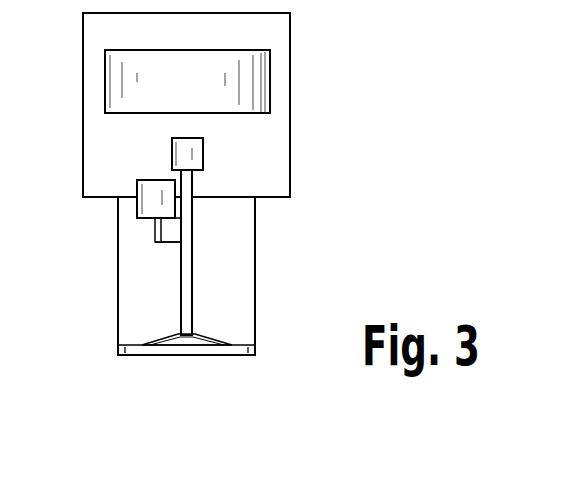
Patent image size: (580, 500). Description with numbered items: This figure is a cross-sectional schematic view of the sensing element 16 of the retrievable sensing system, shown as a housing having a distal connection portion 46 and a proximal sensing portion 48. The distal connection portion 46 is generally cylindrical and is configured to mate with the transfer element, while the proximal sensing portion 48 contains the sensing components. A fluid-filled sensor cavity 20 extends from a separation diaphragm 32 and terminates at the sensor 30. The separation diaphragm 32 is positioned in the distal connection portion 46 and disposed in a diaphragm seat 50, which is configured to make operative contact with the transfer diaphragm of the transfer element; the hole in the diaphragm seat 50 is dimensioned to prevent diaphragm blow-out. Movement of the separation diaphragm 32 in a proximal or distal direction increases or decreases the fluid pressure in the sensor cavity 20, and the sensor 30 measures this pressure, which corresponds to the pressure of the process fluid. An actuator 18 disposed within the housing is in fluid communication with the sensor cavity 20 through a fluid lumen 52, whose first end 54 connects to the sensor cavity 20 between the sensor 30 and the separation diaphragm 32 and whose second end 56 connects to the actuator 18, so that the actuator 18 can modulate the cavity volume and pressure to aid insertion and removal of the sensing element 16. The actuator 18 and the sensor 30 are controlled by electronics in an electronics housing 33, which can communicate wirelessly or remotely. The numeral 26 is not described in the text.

The sensing element 16 is at (363, 67).
The actuator 18 is at (137, 188).
The sensor cavity 20 is at (193, 232).
The container 26 is at (510, 0).
The sensor 30 is at (172, 157).
The separation diaphragm 32 is at (233, 353).
The electronics housing 33 is at (105, 78).
The distal connection portion 46 is at (272, 200).
The proximal sensing portion 48 is at (312, 13).
The diaphragm seat 50 is at (210, 342).
The fluid lumen 52 is at (157, 240).
The first end 54 is at (168, 247).
The second end 56 is at (155, 226).